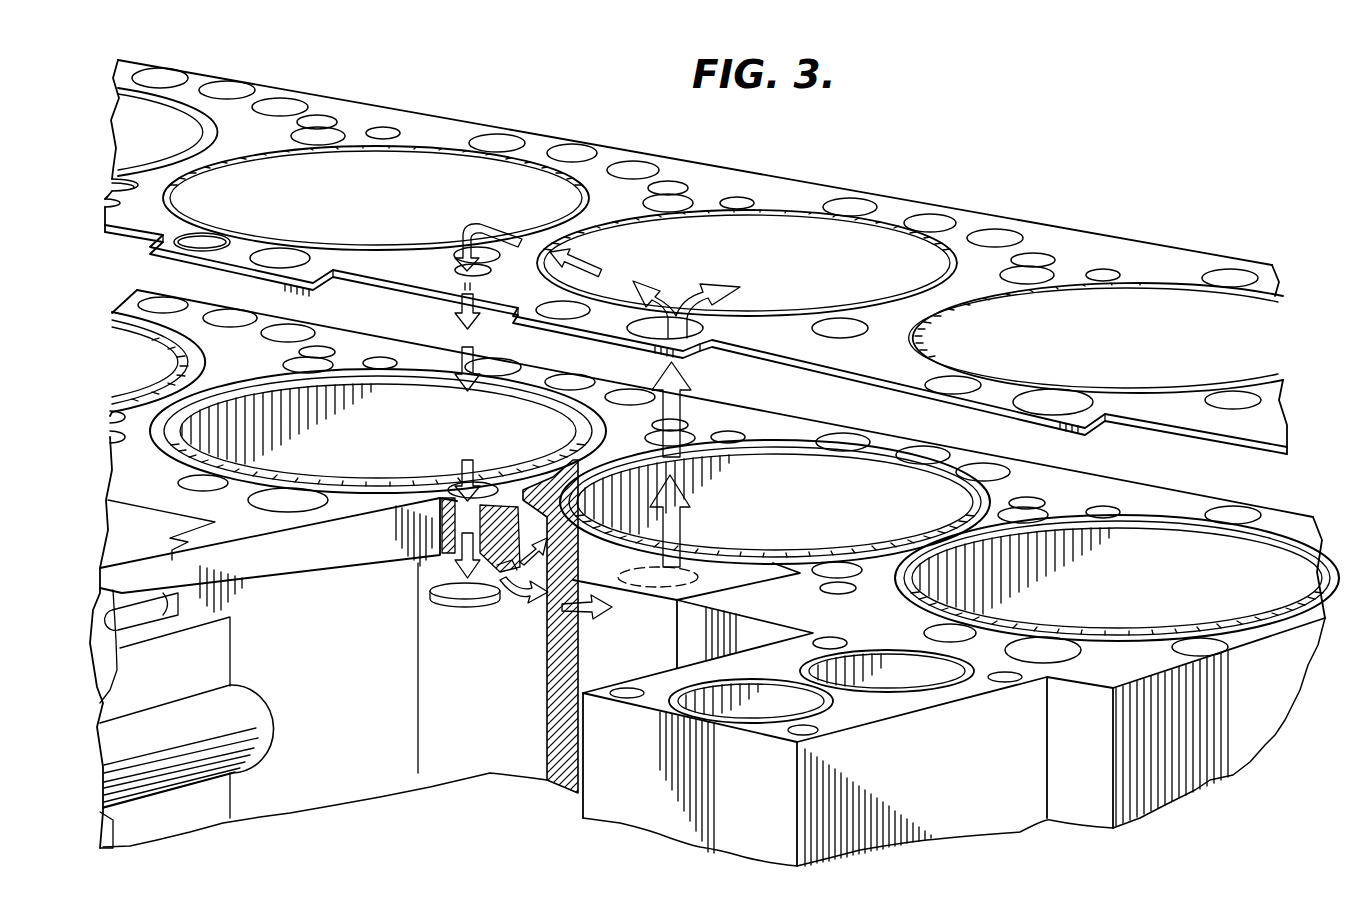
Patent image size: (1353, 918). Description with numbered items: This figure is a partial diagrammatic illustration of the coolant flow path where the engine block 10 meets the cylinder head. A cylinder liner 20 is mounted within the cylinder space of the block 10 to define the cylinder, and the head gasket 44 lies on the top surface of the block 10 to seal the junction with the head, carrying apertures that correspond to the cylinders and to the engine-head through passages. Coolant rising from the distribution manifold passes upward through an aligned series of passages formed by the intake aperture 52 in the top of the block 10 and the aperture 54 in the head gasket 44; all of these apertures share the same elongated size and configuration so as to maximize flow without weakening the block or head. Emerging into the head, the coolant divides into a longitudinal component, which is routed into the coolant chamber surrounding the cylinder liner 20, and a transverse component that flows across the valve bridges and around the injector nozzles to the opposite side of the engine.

The block 10 is at (674, 804).
The cylinder liner 20 is at (590, 652).
The head gasket 44 is at (1097, 243).
The intake aperture 52 is at (673, 577).
The head gasket aperture 54 is at (303, 262).